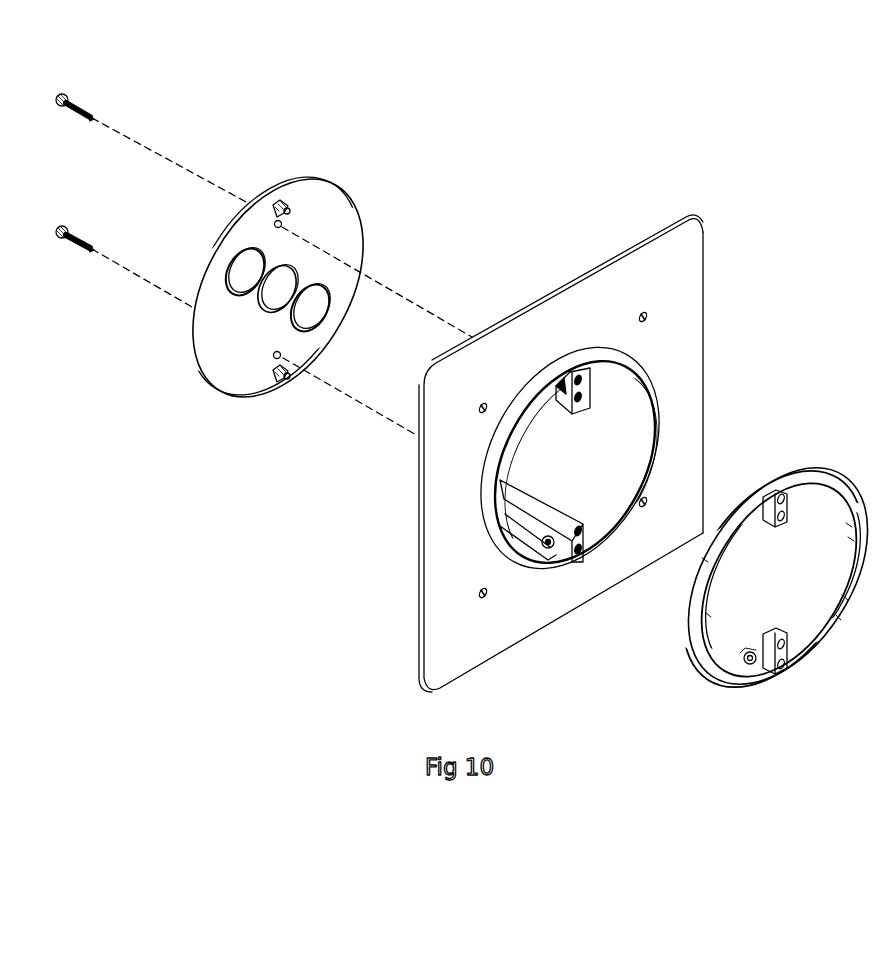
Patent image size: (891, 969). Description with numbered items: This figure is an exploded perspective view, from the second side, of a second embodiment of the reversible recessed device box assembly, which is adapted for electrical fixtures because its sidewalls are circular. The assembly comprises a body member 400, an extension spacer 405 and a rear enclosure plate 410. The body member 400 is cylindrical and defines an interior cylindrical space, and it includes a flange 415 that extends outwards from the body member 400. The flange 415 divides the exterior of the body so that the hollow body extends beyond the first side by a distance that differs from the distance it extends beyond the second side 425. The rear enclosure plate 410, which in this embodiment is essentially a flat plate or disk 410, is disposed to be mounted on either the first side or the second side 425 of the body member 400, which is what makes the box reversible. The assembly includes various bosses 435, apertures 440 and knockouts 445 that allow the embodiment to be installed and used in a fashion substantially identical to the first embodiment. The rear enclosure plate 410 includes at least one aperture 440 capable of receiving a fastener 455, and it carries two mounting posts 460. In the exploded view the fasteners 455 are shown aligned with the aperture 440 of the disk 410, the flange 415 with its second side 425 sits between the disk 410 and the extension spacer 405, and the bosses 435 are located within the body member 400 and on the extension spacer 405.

The body member 400 is at (584, 427).
The extension spacer 405 is at (683, 647).
The rear enclosure plate 410 is at (269, 293).
The flange 415 is at (453, 520).
The second side 425 is at (702, 343).
The bosses 435 is at (583, 527).
The aperture 440 is at (273, 355).
The knockouts 445 is at (282, 282).
The fastener 455 is at (92, 228).
The mounting posts 460 is at (285, 206).